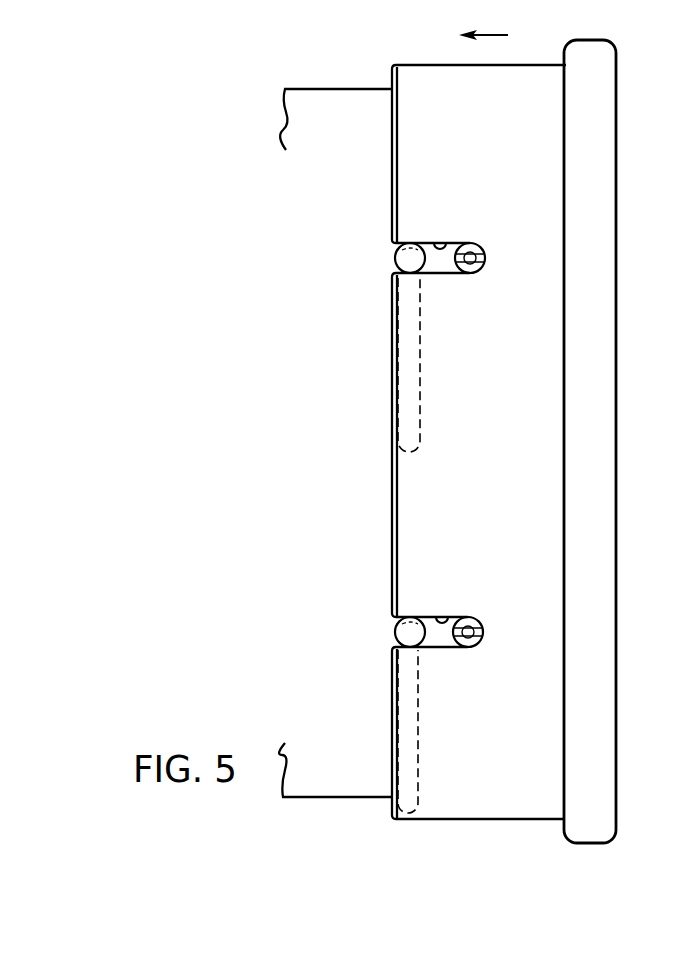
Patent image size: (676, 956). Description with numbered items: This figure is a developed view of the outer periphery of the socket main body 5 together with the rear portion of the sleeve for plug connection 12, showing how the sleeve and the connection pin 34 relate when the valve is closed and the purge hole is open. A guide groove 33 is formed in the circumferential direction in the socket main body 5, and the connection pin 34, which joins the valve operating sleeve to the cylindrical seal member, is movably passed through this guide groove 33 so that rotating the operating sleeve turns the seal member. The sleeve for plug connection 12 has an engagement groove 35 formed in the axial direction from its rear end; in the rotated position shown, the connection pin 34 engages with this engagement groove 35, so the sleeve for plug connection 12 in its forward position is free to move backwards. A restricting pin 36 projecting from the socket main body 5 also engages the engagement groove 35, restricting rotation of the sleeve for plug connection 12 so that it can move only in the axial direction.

The socket main body 5 is at (306, 116).
The sleeve for plug connection 12 is at (559, 126).
The guide groove 33 is at (405, 362).
The connection pin 34 is at (404, 255).
The engagement groove 35 is at (445, 243).
The restricting pin 36 is at (470, 243).